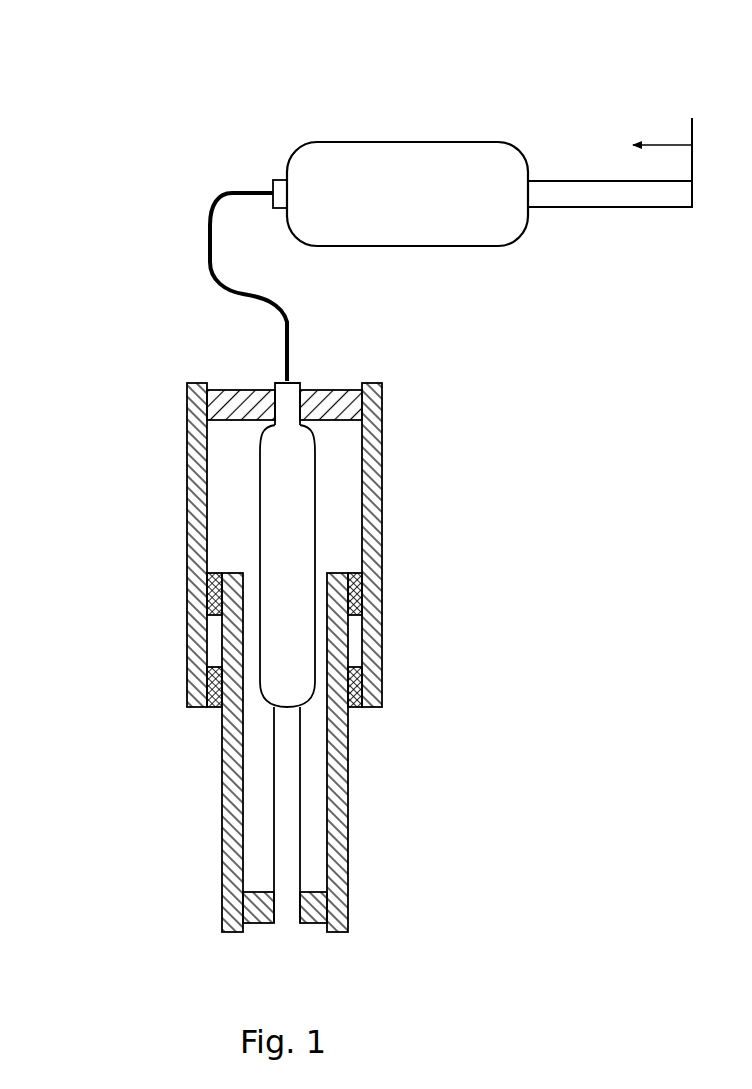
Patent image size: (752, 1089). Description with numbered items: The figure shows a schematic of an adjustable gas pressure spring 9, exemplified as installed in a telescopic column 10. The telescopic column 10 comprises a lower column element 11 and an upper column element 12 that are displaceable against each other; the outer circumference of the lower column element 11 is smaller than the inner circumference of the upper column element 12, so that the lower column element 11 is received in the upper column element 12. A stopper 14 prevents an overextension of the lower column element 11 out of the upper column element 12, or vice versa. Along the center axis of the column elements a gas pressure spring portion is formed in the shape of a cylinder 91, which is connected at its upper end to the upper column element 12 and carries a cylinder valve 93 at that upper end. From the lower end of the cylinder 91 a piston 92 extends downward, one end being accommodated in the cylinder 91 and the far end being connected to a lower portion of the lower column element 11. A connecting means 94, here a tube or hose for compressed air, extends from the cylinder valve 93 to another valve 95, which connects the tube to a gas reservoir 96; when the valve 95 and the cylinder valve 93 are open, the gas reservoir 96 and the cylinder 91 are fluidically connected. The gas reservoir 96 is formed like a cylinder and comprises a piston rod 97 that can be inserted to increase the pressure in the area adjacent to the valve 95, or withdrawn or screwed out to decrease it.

The adjustable gas pressure spring 9 is at (316, 520).
The telescopic column 10 is at (393, 777).
The lower column element 11 is at (350, 845).
The upper column element 12 is at (383, 580).
The stopper 14 is at (204, 710).
The cylinder 91 is at (260, 513).
The piston 92 is at (280, 840).
The cylinder valve 93 is at (300, 380).
The connecting means 94 is at (283, 337).
The valve 95 is at (273, 182).
The gas reservoir 96 is at (363, 140).
The piston rod 97 is at (612, 181).